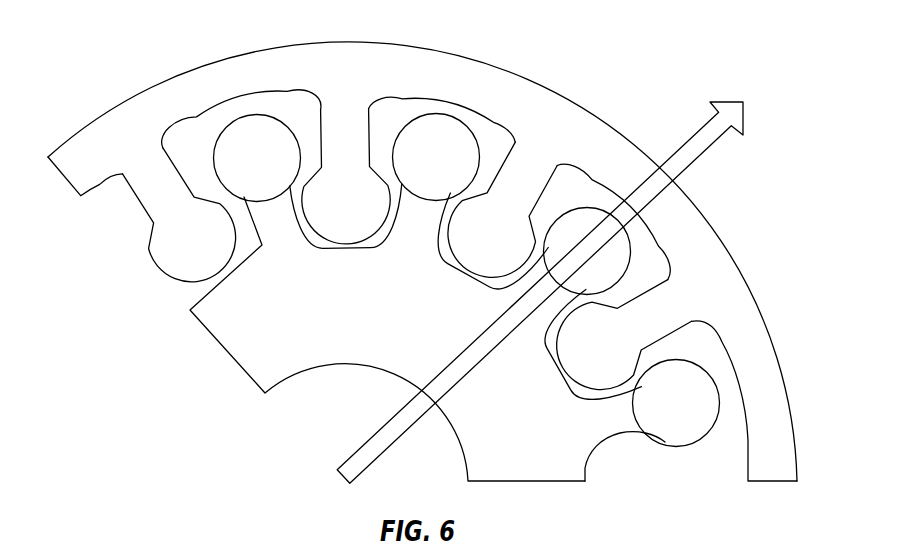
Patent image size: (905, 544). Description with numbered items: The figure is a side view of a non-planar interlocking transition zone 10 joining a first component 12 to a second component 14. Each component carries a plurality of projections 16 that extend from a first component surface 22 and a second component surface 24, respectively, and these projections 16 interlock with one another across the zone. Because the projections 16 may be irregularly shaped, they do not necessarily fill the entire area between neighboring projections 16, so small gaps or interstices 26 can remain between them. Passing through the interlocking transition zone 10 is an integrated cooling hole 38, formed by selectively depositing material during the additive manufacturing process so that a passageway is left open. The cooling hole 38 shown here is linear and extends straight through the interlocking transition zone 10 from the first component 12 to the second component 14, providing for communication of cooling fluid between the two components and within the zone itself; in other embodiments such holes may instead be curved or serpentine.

The interlocking transition zone 10 is at (682, 74).
The first component 12 is at (240, 332).
The second component 14 is at (177, 98).
The projections 16 is at (187, 237).
The first component surface 22 is at (586, 468).
The second component surface 24 is at (747, 463).
The interstices 26 is at (498, 143).
The cooling hole 38 is at (643, 193).